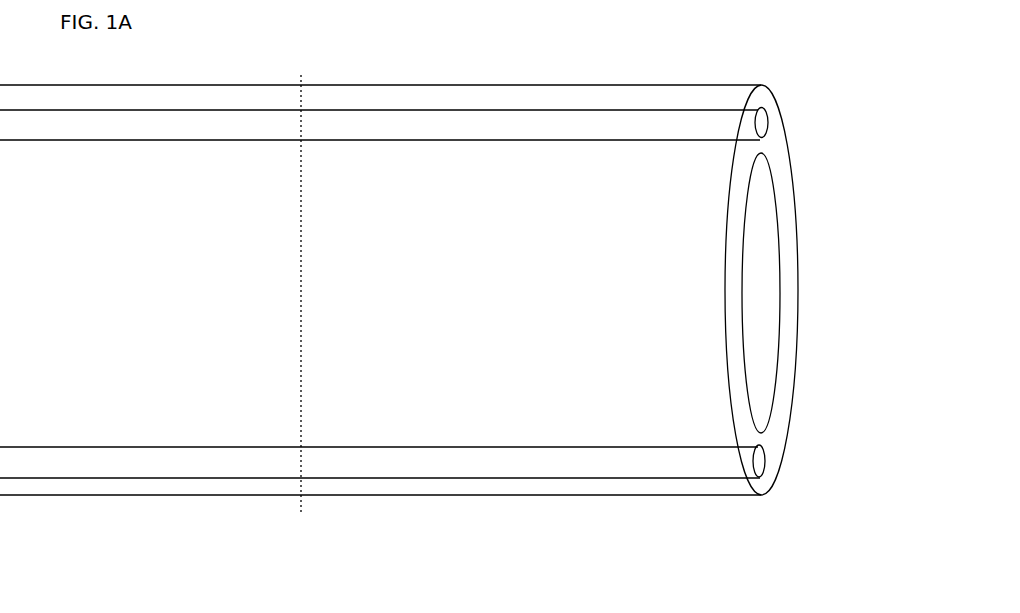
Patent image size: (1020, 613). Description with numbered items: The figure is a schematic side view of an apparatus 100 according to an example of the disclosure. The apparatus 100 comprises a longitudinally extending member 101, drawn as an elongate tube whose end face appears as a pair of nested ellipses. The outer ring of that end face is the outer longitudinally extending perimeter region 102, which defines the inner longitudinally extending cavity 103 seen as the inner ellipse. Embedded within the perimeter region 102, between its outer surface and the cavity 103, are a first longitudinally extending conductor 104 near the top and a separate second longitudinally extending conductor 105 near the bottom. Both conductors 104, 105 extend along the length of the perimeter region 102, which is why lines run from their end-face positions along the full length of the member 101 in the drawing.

The apparatus 100 is at (448, 318).
The longitudinally extending member 101 is at (587, 401).
The outer longitudinally extending perimeter region 102 is at (788, 397).
The inner longitudinally extending cavity 103 is at (761, 283).
The first longitudinally extending conductor 104 is at (766, 123).
The second longitudinally extending conductor 105 is at (766, 462).